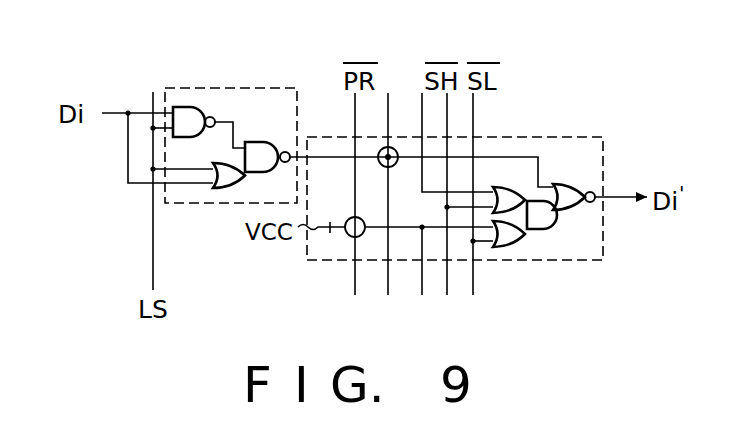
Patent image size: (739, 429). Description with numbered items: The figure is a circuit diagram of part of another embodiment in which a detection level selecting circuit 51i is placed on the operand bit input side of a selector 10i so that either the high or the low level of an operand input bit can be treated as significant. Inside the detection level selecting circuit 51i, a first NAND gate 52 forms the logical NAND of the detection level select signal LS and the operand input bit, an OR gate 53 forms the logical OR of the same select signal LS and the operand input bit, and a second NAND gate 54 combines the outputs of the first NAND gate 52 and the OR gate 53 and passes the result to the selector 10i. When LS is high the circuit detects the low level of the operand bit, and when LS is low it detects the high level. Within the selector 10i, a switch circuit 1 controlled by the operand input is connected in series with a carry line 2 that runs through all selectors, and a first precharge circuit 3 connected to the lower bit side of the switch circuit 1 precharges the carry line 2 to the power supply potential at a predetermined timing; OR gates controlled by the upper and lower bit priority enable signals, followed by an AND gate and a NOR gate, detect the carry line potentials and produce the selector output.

The first NAND gate 52 is at (182, 107).
The detection level selecting circuit 51i is at (212, 88).
The second NAND gate 54 is at (270, 140).
The OR gate 53 is at (220, 190).
The selector 10i is at (555, 135).
The carry line 2 is at (389, 118).
The switch circuit 1 is at (382, 168).
The first precharge circuit 3 is at (362, 237).